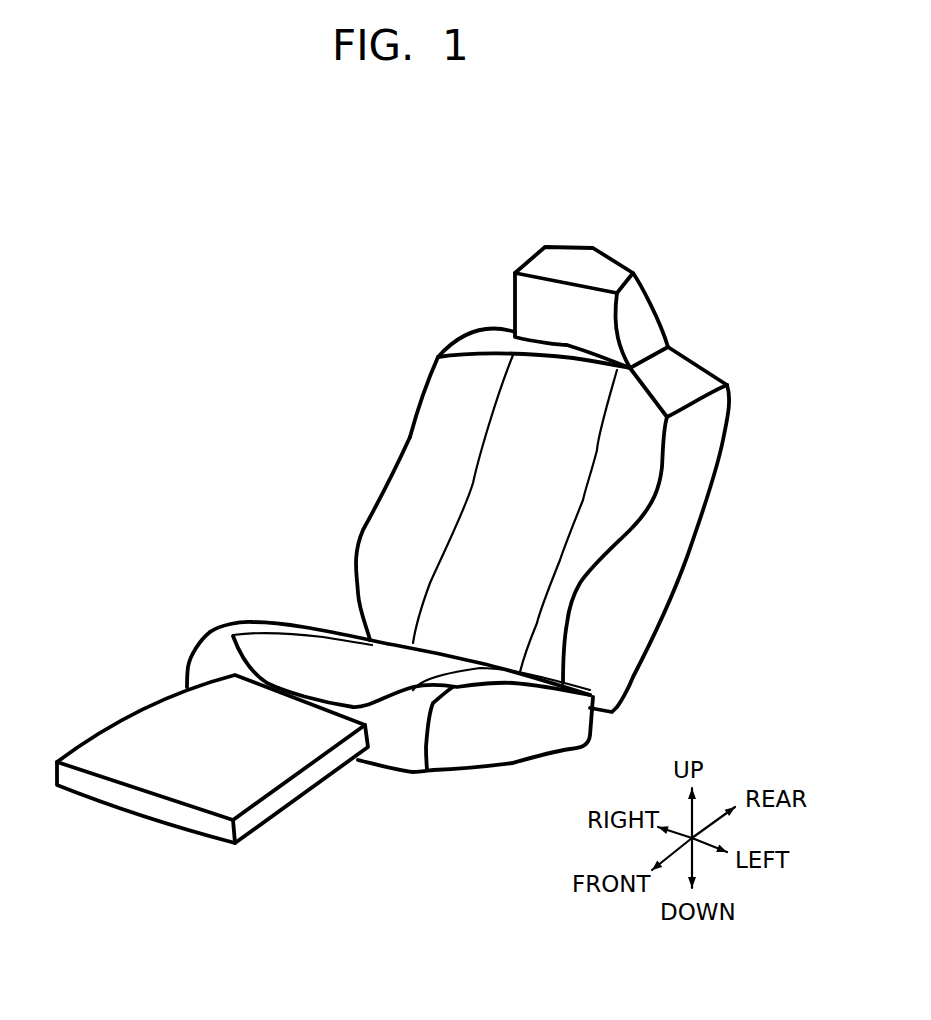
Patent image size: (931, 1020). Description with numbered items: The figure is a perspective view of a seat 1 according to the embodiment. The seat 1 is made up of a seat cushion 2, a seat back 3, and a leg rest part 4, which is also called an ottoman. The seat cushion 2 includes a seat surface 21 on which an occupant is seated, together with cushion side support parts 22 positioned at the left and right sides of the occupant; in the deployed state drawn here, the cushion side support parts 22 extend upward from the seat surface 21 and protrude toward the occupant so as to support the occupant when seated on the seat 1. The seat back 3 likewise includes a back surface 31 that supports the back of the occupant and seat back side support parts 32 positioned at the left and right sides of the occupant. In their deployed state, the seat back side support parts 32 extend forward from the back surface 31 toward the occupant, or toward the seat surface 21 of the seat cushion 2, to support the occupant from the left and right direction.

The seat 1 is at (123, 366).
The seat cushion 2 is at (275, 605).
The seat back 3 is at (390, 437).
The leg rest part 4 is at (112, 697).
The seat surface 21 is at (360, 680).
The cushion side support parts 22 is at (460, 680).
The back surface 31 is at (540, 548).
The seat back side support parts 32 is at (573, 595).